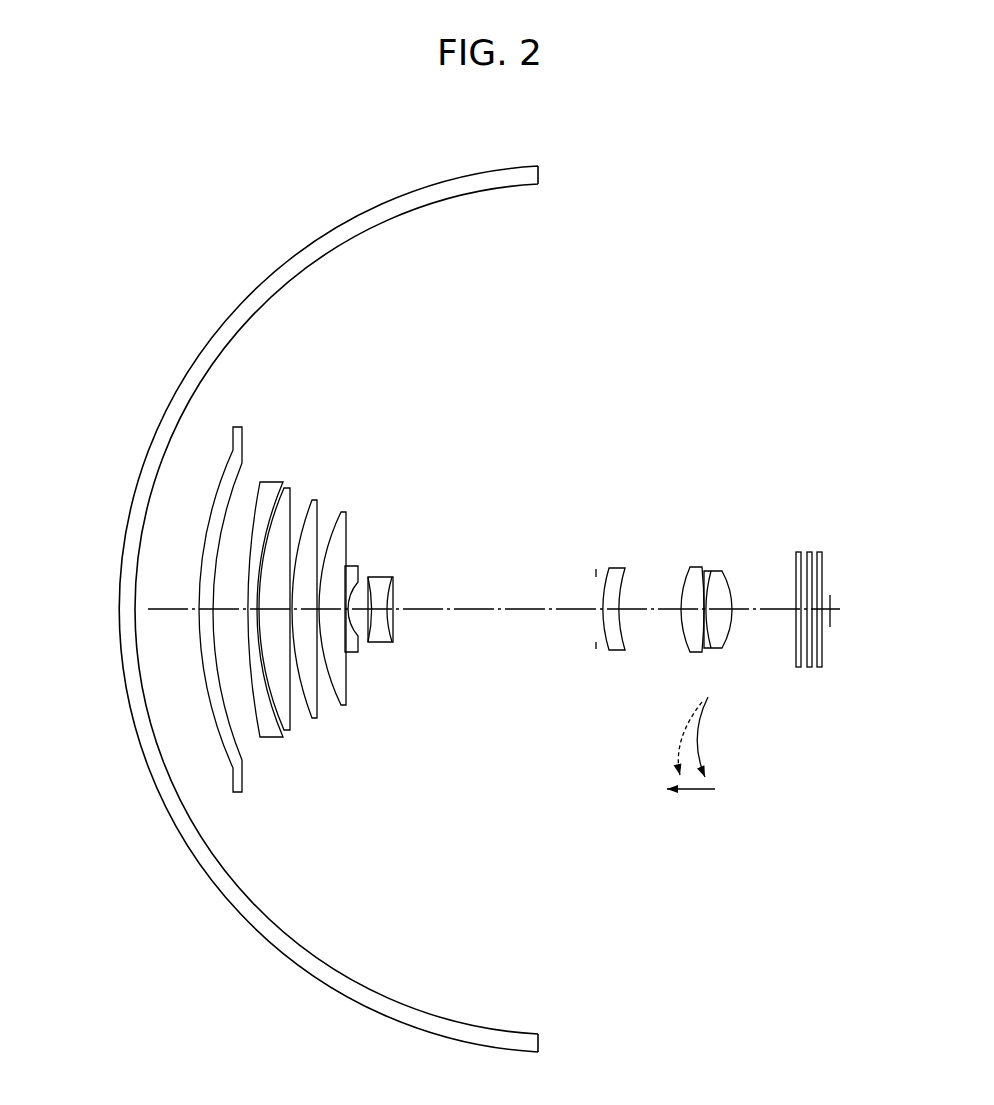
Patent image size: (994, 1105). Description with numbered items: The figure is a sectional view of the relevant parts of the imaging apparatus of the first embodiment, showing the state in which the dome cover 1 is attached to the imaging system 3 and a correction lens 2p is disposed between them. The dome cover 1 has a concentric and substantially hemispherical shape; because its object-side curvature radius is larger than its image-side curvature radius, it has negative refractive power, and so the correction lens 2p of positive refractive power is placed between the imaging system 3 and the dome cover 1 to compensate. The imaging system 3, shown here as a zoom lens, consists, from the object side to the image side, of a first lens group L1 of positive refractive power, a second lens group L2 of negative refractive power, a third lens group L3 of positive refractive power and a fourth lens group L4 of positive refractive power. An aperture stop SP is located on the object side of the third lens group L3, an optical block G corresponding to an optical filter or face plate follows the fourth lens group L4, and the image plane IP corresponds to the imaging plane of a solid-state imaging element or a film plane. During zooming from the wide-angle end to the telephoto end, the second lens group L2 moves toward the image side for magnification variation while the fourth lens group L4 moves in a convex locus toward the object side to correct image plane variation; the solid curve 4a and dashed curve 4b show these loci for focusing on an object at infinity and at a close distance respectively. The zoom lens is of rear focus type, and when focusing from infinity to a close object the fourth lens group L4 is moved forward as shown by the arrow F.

The dome cover 1 is at (178, 822).
The correction lens 2p is at (236, 792).
The imaging system 3 is at (835, 455).
The first lens group L1 is at (305, 840).
The second lens group L2 is at (465, 763).
The third lens group L3 is at (613, 763).
The fourth lens group L4 is at (732, 660).
The aperture stop SP is at (596, 570).
The optical block G is at (828, 672).
The image plane IP is at (834, 600).
The solid curve 4a is at (712, 737).
The dashed curve 4b is at (674, 738).
The arrow F is at (691, 801).